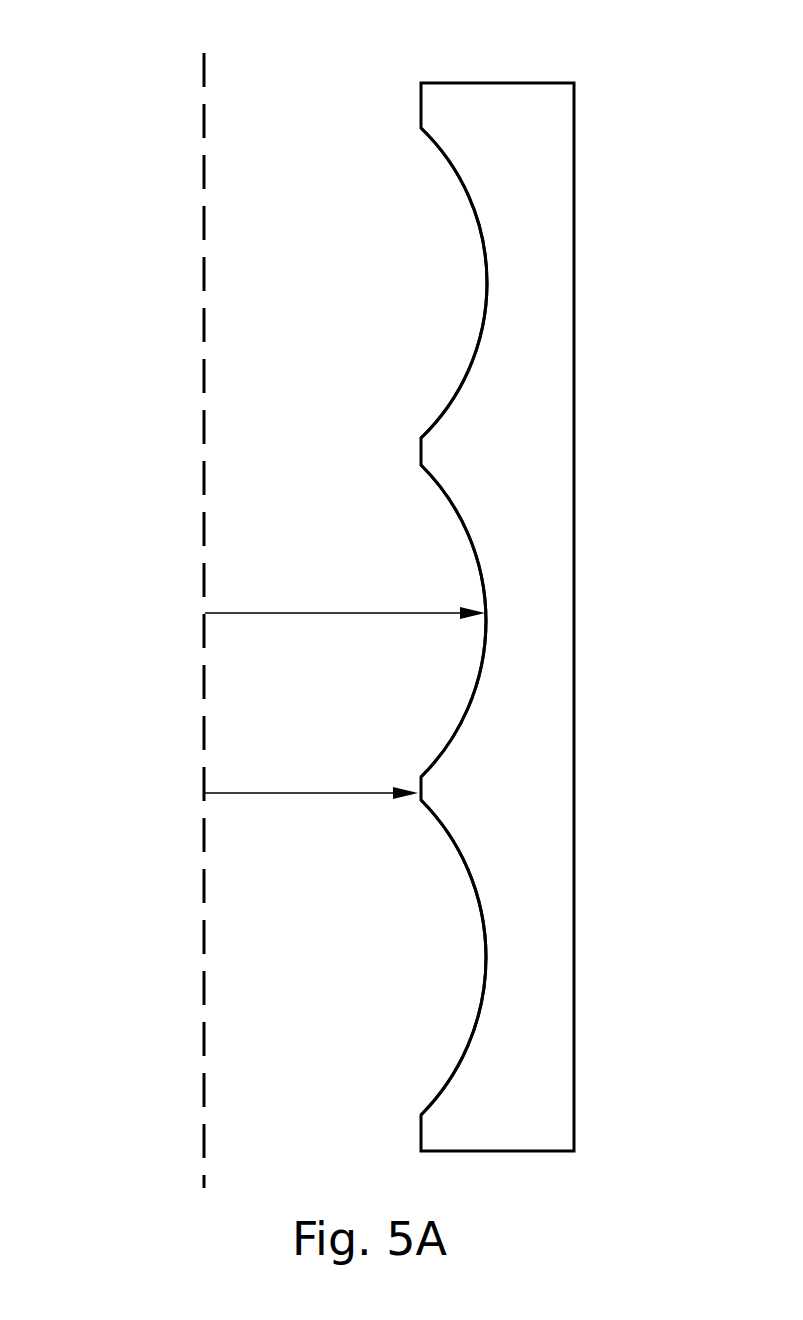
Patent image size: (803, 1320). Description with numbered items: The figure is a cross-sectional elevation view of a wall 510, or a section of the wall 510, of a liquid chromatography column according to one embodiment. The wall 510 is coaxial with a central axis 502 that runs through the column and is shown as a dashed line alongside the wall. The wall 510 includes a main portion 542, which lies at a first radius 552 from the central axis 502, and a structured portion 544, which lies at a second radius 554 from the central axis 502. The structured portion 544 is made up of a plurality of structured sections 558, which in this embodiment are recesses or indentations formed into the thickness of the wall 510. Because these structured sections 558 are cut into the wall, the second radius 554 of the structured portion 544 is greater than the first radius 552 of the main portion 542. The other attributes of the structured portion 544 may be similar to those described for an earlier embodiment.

The central axis 502 is at (204, 68).
The wall 510 is at (645, 134).
The structured sections 558 is at (432, 137).
The structured portion 544 is at (376, 310).
The main portion 542 is at (377, 450).
The second radius 554 is at (235, 612).
The first radius 552 is at (247, 792).